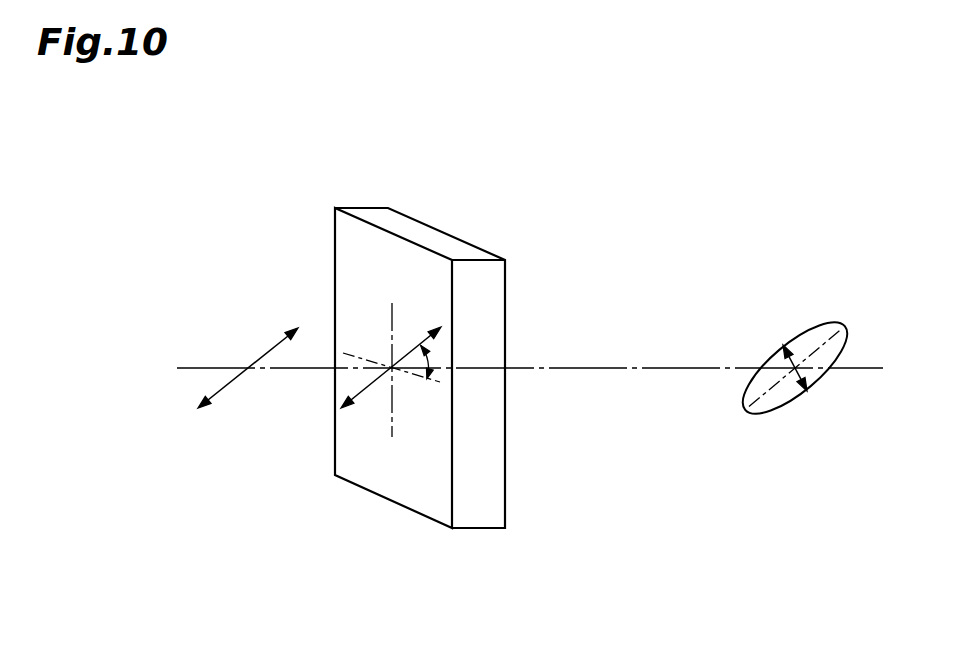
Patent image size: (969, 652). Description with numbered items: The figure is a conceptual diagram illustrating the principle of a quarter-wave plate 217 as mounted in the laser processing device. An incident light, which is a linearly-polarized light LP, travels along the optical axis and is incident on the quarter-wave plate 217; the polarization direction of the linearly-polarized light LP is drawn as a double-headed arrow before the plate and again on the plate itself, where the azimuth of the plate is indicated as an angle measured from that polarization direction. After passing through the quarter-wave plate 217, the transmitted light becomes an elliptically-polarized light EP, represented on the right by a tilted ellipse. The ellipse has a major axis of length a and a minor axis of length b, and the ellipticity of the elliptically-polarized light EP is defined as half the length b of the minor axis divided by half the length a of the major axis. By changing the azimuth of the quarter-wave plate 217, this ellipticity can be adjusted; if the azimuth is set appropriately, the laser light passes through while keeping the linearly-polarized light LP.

The quarter-wave plate 217 is at (450, 245).
The linearly-polarized light LP is at (230, 387).
The elliptically-polarized light EP is at (823, 377).
The length of the major axis a is at (828, 343).
The length of the minor axis b is at (796, 357).